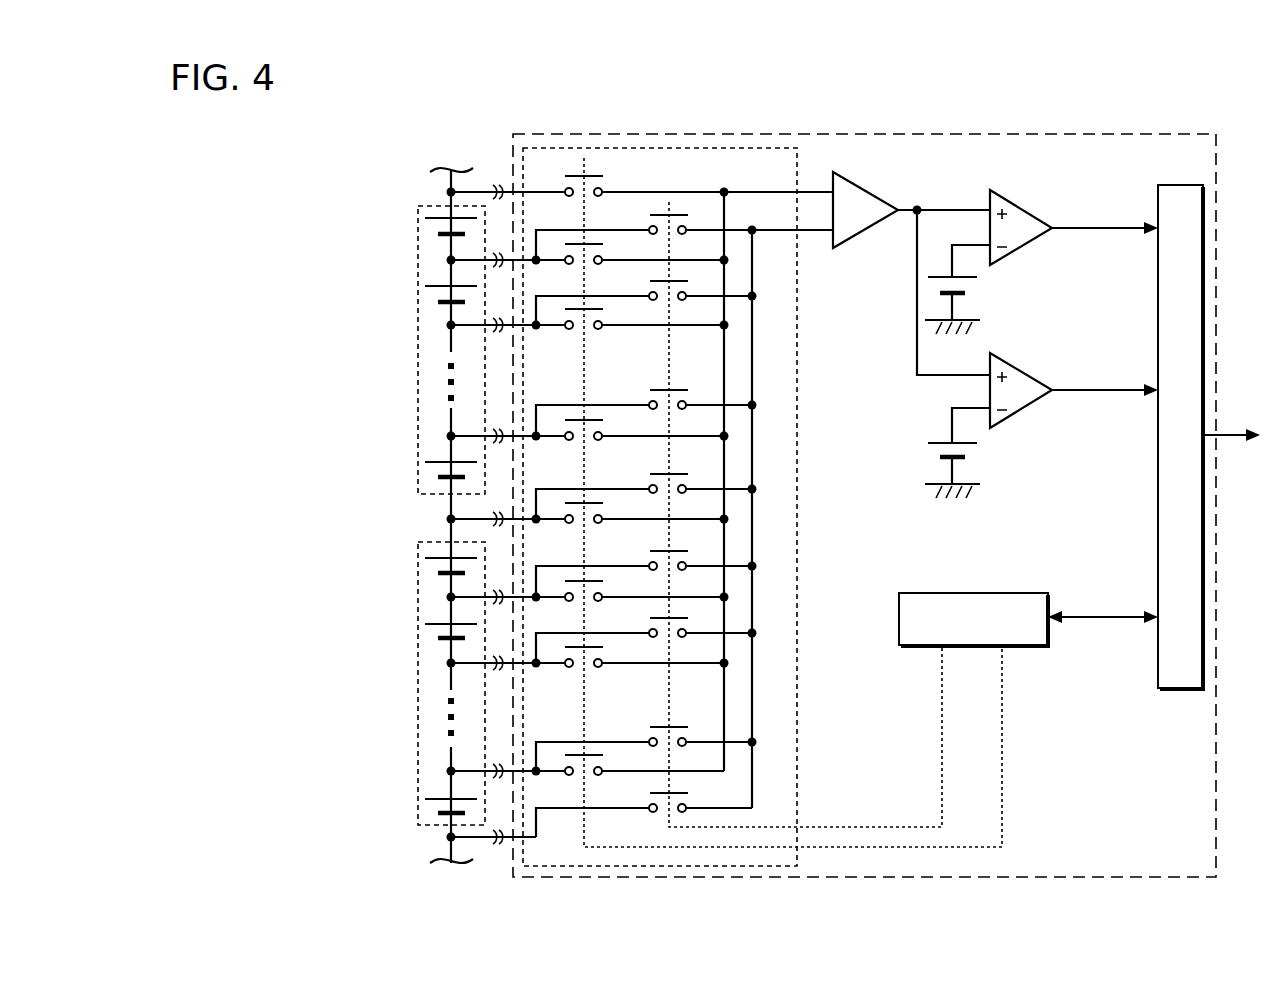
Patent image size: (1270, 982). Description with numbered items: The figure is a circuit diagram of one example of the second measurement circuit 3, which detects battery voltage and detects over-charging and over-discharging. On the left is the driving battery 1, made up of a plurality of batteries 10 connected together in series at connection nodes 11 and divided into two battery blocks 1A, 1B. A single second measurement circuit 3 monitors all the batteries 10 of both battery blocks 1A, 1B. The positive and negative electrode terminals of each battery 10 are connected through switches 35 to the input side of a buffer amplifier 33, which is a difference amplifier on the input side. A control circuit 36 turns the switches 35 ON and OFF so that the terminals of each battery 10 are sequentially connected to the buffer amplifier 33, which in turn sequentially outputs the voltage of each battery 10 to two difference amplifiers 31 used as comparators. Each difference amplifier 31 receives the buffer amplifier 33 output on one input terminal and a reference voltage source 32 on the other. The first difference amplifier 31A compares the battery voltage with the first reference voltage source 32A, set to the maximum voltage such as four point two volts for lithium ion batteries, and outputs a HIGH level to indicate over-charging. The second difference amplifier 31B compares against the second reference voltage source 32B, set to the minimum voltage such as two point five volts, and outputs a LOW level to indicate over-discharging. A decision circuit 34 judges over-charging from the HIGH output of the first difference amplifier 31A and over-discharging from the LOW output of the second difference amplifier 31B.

The driving battery 1 is at (298, 708).
The battery block 1A is at (418, 362).
The battery block 1B is at (418, 702).
The battery 10 is at (437, 799).
The connection node 11 is at (451, 837).
The second measurement circuit 3 is at (1000, 134).
The difference amplifier 31 is at (1116, 265).
The first difference amplifier 31A is at (1036, 243).
The second difference amplifier 31B is at (1036, 372).
The reference voltage source 32 is at (852, 262).
The first reference voltage source 32A is at (935, 288).
The second reference voltage source 32B is at (935, 440).
The buffer amplifier 33 is at (868, 190).
The decision circuit 34 is at (1160, 689).
The switch 35 is at (707, 148).
The control circuit 36 is at (938, 593).